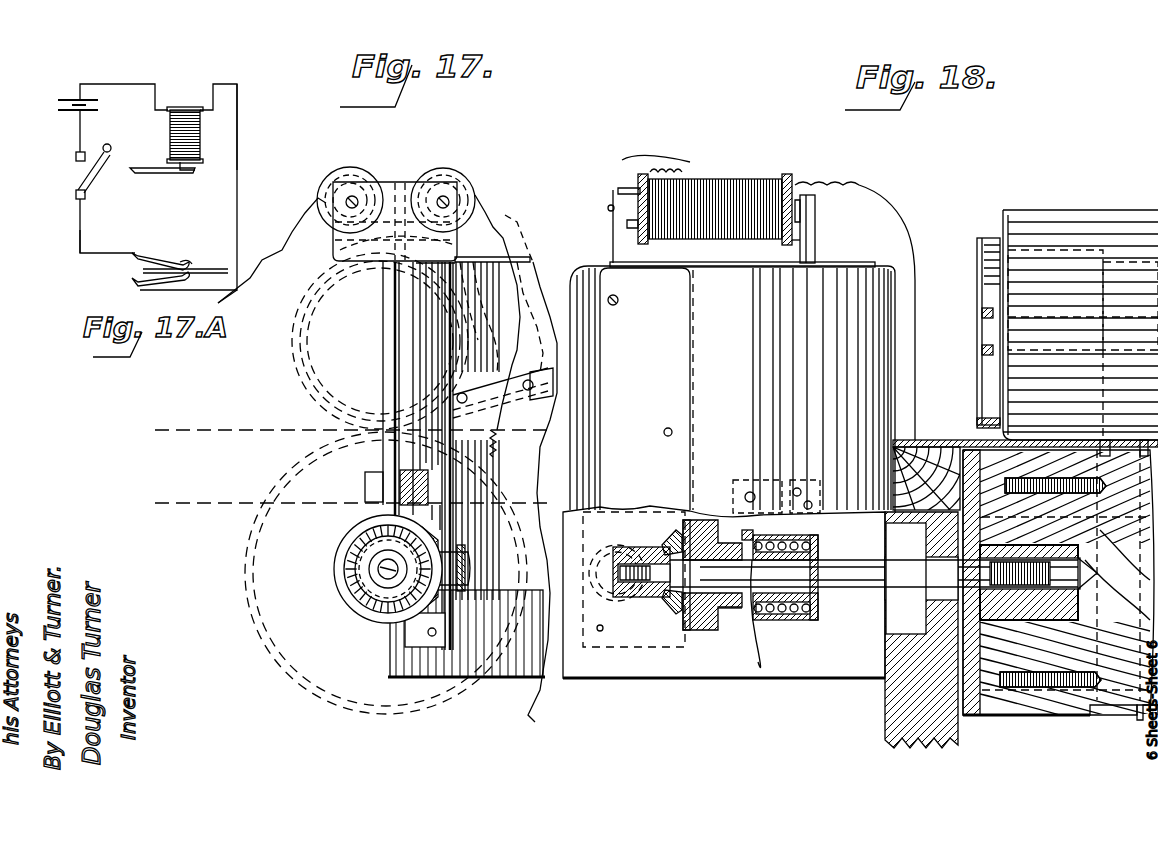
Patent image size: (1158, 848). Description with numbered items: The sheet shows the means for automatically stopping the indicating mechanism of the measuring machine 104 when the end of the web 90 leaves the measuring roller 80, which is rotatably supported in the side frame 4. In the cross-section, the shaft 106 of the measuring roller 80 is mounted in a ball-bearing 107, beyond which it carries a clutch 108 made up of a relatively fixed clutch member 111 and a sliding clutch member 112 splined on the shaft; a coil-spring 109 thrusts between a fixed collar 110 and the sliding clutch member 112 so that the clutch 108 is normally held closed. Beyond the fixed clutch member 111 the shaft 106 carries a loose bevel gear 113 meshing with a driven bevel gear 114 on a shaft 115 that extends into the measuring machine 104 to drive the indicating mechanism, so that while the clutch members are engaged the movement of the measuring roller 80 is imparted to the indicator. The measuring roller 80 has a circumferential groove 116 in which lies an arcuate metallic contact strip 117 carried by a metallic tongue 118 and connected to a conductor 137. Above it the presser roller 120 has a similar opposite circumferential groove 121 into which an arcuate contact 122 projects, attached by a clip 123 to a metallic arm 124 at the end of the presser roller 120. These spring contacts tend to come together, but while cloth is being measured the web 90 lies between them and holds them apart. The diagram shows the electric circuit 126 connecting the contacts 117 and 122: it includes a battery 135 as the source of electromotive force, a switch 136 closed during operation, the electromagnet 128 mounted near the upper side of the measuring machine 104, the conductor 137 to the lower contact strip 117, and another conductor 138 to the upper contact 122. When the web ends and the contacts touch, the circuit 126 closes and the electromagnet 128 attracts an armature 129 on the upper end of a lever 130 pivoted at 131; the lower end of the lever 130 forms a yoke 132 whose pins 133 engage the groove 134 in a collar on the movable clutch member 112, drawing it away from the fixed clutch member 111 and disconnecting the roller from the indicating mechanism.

In FIG. 18, the side frame 4 is at (950, 440).
In FIG. 18, the measuring roller 80 is at (1060, 697).
In FIG. 17A, the web 90 is at (200, 270).
In FIG. 18, the measuring machine 104 is at (729, 472).
In FIG. 18, the shaft 106 is at (870, 580).
In FIG. 18, the ball-bearing 107 is at (905, 617).
In FIG. 18, the clutch 108 is at (730, 628).
In FIG. 18, the coil-spring 109 is at (792, 610).
In FIG. 18, the fixed collar 110 is at (818, 556).
In FIG. 18, the fixed clutch member 111 is at (690, 520).
In FIG. 18, the sliding clutch member 112 is at (702, 548).
In FIG. 17, the loose bevel gear 113 is at (368, 600).
In FIG. 18, the loose bevel gear 113 is at (672, 605).
In FIG. 17, the driven bevel gear 114 is at (393, 632).
In FIG. 17, the shaft 115 is at (450, 567).
In FIG. 18, the circumferential groove 116 is at (1118, 708).
In FIG. 17A, the contact strip 117 is at (135, 278).
In FIG. 17, the contact strip 117 is at (297, 478).
In FIG. 18, the metallic tongue 118 is at (1030, 440).
In FIG. 17, the presser roller 120 is at (301, 384).
In FIG. 18, the presser roller 120 is at (1053, 250).
In FIG. 18, the circumferential groove 121 is at (1118, 262).
In FIG. 17A, the contact 122 is at (140, 254).
In FIG. 17, the contact 122 is at (358, 425).
In FIG. 18, the contact 122 is at (1120, 345).
In FIG. 17, the clip 123 is at (523, 261).
In FIG. 17, the metallic arm 124 is at (498, 237).
In FIG. 18, the metallic arm 124 is at (988, 238).
In FIG. 17A, the electric circuit 126 is at (200, 241).
In FIG. 17A, the electromagnet 128 is at (200, 108).
In FIG. 17, the electromagnet 128 is at (396, 206).
In FIG. 18, the electromagnet 128 is at (728, 178).
In FIG. 17A, the armature 129 is at (205, 174).
In FIG. 18, the armature 129 is at (812, 198).
In FIG. 17A, the lever 130 is at (142, 172).
In FIG. 18, the lever 130 is at (812, 244).
In FIG. 18, the pivot 131 is at (752, 497).
In FIG. 18, the yoke 132 is at (757, 535).
In FIG. 18, the pins 133 is at (775, 618).
In FIG. 18, the groove 134 is at (756, 585).
In FIG. 17A, the battery 135 is at (73, 62).
In FIG. 17A, the switch 136 is at (95, 178).
In FIG. 17A, the conductor 137 is at (237, 165).
In FIG. 18, the conductor 137 is at (913, 262).
In FIG. 17A, the conductor 138 is at (80, 240).
In FIG. 18, the conductor 138 is at (882, 705).